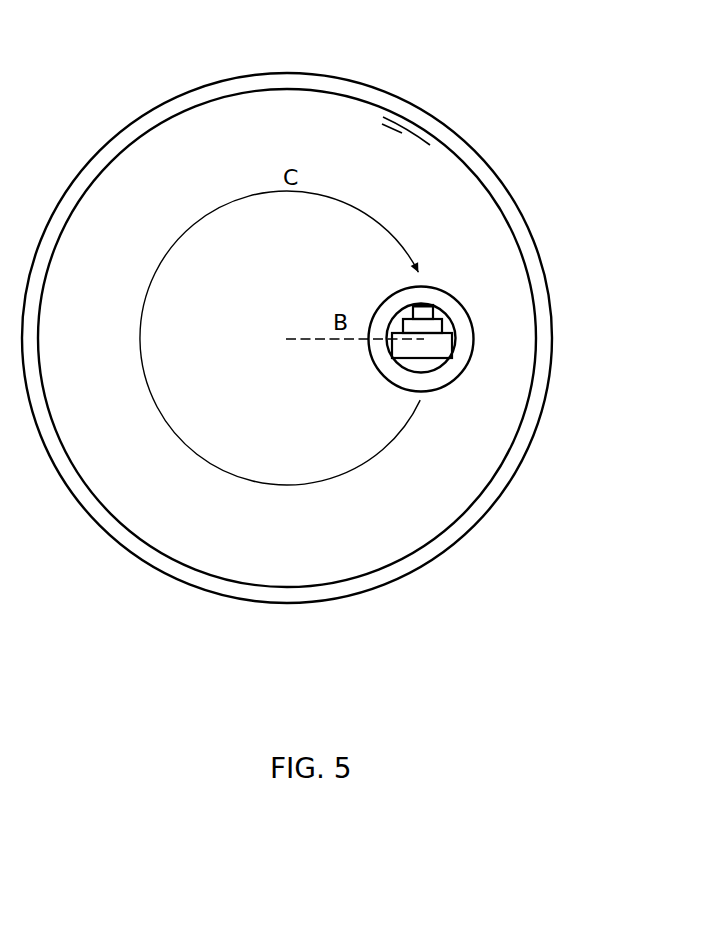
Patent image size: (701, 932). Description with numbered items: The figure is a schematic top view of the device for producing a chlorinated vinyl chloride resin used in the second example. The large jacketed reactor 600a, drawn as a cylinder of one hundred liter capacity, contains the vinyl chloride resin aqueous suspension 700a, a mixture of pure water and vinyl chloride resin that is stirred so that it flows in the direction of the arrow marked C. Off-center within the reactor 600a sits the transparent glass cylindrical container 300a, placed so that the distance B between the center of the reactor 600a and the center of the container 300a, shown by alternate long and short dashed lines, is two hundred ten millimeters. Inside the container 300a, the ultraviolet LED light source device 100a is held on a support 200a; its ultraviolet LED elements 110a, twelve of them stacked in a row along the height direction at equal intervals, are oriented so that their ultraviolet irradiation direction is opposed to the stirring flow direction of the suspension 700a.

The reactor 600a is at (284, 80).
The vinyl chloride resin aqueous suspension 700a is at (290, 558).
The cylindrical container 300a is at (452, 374).
The support 200a is at (432, 347).
The ultraviolet LED light source device 100a is at (433, 327).
The ultraviolet LED element 110a is at (432, 308).